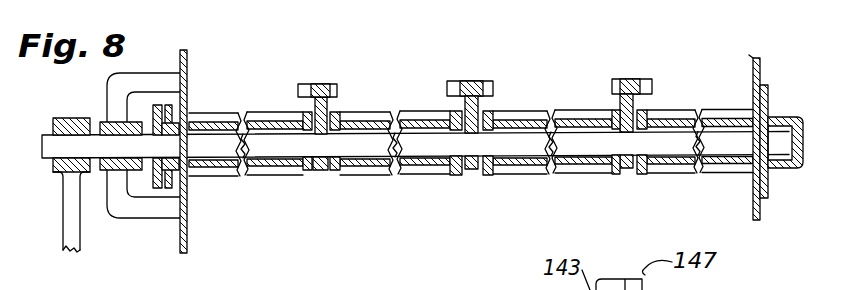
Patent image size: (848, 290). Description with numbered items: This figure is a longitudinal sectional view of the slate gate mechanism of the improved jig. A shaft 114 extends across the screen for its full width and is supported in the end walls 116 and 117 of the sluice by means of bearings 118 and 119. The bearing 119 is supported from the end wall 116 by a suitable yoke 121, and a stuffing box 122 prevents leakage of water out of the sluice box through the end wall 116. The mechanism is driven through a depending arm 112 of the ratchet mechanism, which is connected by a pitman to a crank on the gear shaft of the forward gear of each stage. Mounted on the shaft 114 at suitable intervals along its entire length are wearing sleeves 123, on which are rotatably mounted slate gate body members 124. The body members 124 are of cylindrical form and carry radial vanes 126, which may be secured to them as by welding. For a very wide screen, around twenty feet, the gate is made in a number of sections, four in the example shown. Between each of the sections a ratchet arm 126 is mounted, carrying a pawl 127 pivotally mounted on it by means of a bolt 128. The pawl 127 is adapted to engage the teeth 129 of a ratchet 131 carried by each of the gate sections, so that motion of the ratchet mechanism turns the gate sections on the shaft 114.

The depending arm 112 is at (65, 240).
The shaft 114 is at (421, 146).
The end wall 116 is at (186, 56).
The end wall 117 is at (755, 60).
The bearing 118 is at (776, 118).
The bearing 119 is at (103, 121).
The yoke 121 is at (126, 91).
The stuffing box 122 is at (157, 166).
The wearing sleeve 123 is at (344, 163).
The slate gate body member 124 is at (272, 168).
The radial vane 126 is at (331, 117).
The pawl 127 is at (307, 91).
The bolt 128 is at (333, 97).
The teeth 129 is at (311, 113).
The ratchet 131 is at (318, 171).